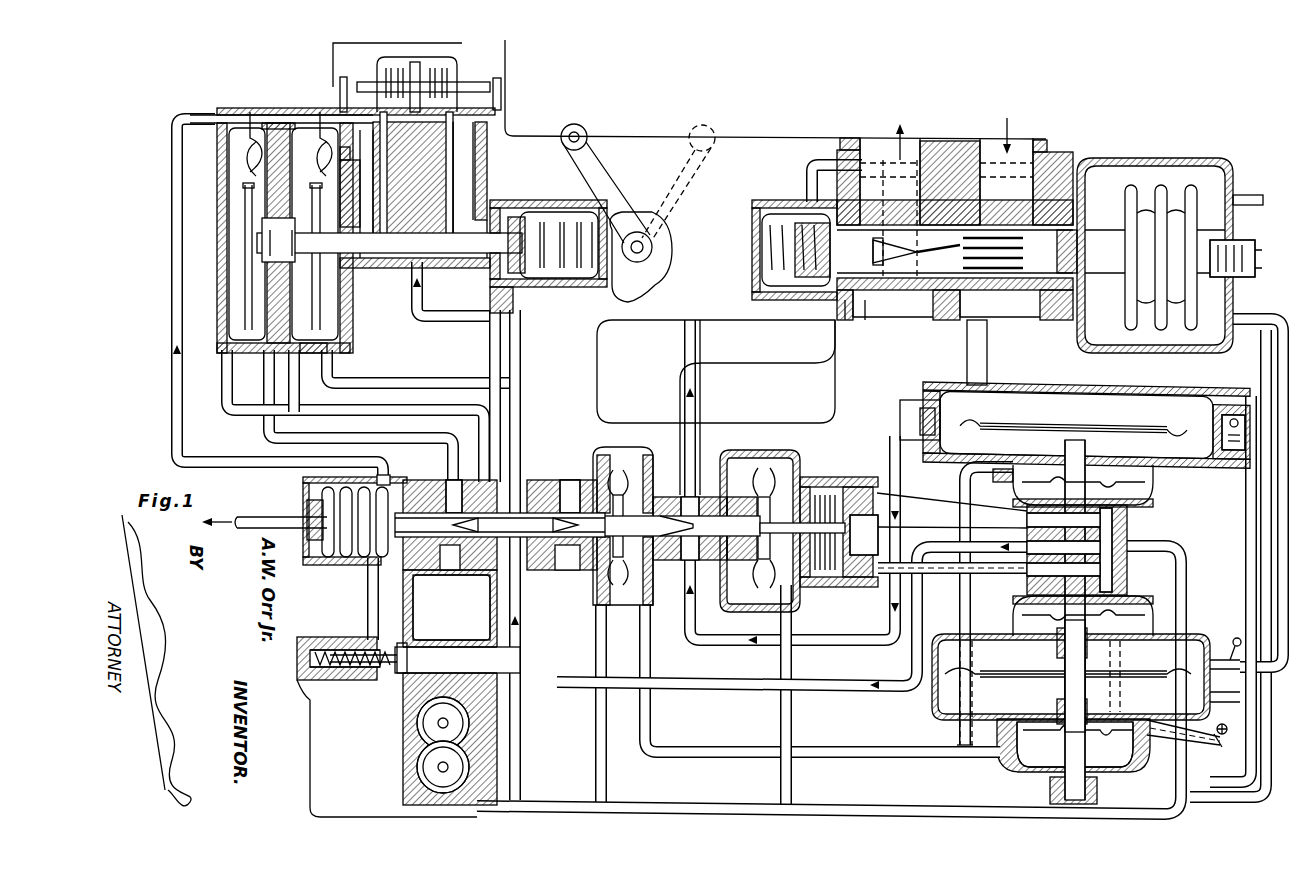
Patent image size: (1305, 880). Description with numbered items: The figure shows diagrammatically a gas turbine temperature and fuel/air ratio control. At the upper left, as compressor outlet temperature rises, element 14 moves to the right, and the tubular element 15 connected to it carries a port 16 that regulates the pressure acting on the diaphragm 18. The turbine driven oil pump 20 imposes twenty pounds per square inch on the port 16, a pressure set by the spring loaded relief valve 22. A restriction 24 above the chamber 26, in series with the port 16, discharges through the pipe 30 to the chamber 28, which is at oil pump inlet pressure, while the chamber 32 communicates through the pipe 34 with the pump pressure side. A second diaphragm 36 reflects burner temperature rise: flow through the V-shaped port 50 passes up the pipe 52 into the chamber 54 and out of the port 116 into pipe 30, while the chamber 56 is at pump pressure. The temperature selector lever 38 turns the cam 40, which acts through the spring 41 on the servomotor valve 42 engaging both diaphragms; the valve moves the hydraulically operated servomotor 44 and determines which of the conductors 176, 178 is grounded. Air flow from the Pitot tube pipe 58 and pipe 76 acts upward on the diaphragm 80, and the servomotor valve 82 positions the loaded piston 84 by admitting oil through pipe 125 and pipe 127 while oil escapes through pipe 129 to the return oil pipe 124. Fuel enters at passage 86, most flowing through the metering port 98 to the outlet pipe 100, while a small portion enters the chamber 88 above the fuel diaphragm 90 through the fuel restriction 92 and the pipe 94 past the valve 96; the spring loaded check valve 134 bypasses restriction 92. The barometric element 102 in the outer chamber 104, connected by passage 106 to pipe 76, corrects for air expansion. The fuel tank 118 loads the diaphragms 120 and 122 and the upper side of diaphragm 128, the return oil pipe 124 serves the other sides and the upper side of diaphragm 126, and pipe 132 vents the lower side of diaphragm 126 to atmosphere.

The element 14 is at (352, 560).
The tubular element 15 is at (405, 524).
The port 16 is at (480, 525).
The diaphragm 18 is at (255, 162).
The turbine driven oil pump 20 is at (440, 723).
The relief valve 22 is at (342, 648).
The restriction 24 is at (283, 112).
The chamber 26 is at (250, 290).
The chamber 28 is at (368, 732).
The pipe 30 is at (175, 350).
The chamber 32 is at (226, 324).
The pipe 34 is at (462, 418).
The diaphragm 36 is at (340, 330).
The temperature selector lever 38 is at (592, 176).
The cam 40 is at (652, 282).
The spring 41 is at (552, 280).
The servomotor valve 42 is at (408, 250).
The hydraulically operated servomotor 44 is at (414, 68).
The V-shaped port 50 is at (553, 524).
The pipe 52 is at (368, 388).
The chamber 54 is at (343, 298).
The chamber 56 is at (313, 310).
The Pitot tube pipe 58 is at (1240, 697).
The pipe 76 is at (1262, 676).
The diaphragm 80 is at (1000, 662).
The servomotor valve 82 is at (1115, 520).
The loaded piston 84 is at (852, 477).
The passage 86 is at (1010, 140).
The chamber 88 is at (1068, 414).
The fuel diaphragm 90 is at (988, 414).
The fuel restriction 92 is at (900, 440).
The pipe 94 is at (850, 635).
The valve 96 is at (686, 526).
The port 98 is at (893, 243).
The pipe 100 is at (890, 138).
The barometric element 102 is at (1120, 195).
The outer chamber 104 is at (1225, 160).
The passage 106 is at (1272, 352).
The port (jet) 116 is at (343, 147).
The fuel tank 118 is at (598, 345).
The diaphragm 120 is at (763, 490).
The diaphragm 122 is at (598, 460).
The return oil pipe 124 is at (1187, 568).
The pipe 125 is at (870, 688).
The diaphragm 126 is at (1022, 612).
The pipe 127 is at (950, 572).
The diaphragm 128 is at (1128, 487).
The pipe 129 is at (940, 516).
The pipe 132 is at (1212, 744).
The check valve 134 is at (1238, 409).
The conductor 176 is at (333, 48).
The conductor 178 is at (486, 46).